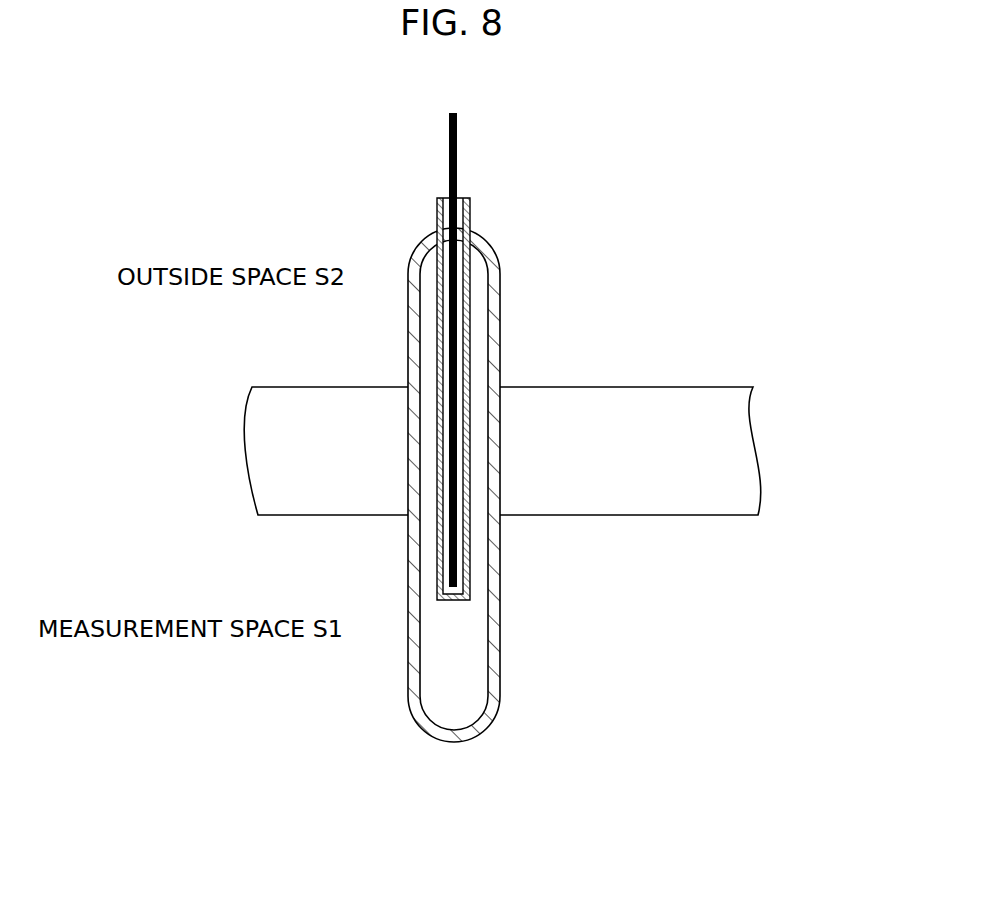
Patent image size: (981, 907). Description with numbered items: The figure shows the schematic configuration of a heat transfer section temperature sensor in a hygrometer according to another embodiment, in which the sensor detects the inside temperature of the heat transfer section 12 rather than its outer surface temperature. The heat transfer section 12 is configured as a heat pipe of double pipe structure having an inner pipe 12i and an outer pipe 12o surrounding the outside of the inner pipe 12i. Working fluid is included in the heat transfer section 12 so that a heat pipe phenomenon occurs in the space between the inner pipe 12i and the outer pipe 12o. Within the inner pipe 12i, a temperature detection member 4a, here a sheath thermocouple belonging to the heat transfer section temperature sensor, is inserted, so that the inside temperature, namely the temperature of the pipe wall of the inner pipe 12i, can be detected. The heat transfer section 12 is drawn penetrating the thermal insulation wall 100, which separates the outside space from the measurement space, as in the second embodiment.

The temperature detection member 4a is at (457, 150).
The heat transfer section 12 is at (407, 698).
The inner pipe 12i is at (470, 304).
The outer pipe 12o is at (498, 350).
The thermal insulation wall 100 is at (716, 387).